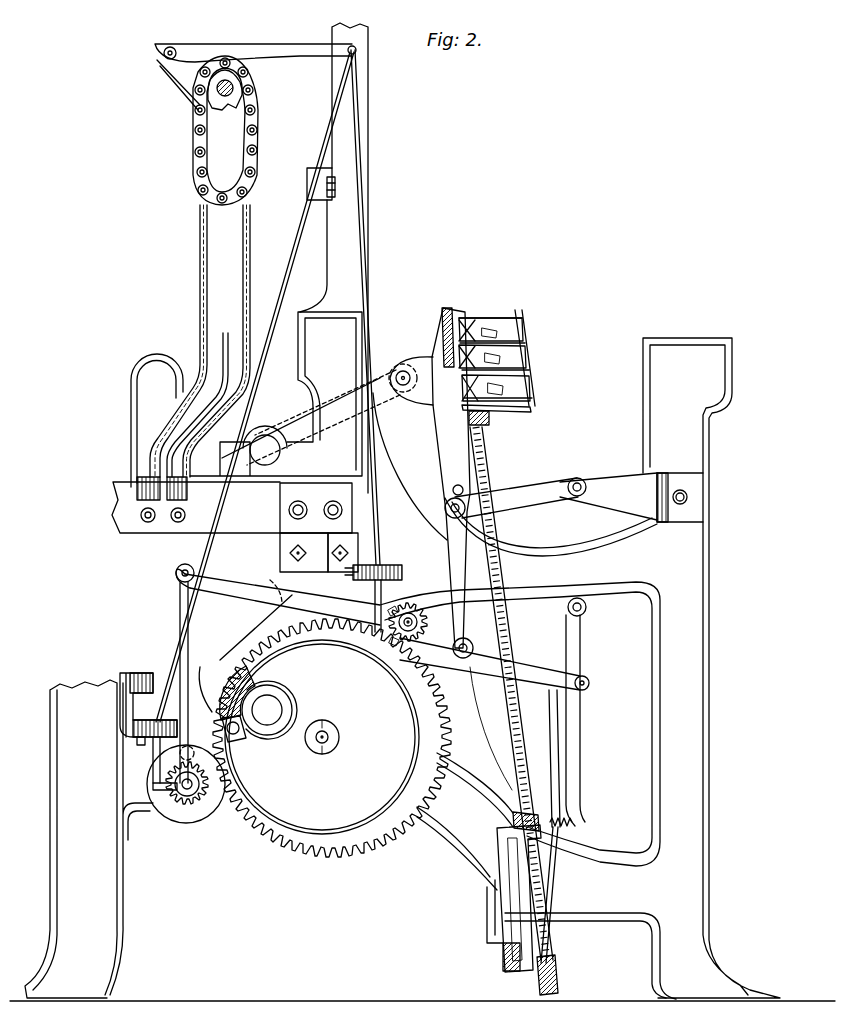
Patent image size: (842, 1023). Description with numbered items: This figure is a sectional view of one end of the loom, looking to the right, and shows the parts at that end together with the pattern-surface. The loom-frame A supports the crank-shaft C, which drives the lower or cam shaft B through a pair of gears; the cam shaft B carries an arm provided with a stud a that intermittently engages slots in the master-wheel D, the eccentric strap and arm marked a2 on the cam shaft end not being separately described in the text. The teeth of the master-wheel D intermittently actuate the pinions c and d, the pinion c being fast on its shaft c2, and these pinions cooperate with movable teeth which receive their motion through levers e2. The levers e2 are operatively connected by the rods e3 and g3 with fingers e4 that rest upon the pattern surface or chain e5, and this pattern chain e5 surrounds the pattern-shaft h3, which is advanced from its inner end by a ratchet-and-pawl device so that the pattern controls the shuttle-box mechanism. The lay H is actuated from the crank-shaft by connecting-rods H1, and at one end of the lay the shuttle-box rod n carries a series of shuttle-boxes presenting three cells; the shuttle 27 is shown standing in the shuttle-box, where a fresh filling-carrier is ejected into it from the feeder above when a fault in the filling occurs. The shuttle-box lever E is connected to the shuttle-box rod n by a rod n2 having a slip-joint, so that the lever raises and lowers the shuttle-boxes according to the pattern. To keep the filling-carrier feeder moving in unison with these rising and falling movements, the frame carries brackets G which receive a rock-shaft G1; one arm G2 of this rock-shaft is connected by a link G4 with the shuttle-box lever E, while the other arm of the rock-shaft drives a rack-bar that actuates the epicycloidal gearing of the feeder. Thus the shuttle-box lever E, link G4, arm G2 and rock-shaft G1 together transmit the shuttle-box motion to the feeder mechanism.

The loom-frame A is at (708, 636).
The cam shaft B is at (271, 705).
The crank-shaft C is at (266, 443).
The master-wheel D is at (320, 850).
The shuttle-box lever E is at (525, 663).
The brackets G is at (625, 480).
The rock-shaft G1 is at (583, 481).
The arm of rock-shaft G2 is at (540, 487).
The link G4 is at (440, 530).
The lay H is at (443, 426).
The connecting-rods H1 is at (380, 378).
The stud a is at (242, 740).
The eccentric strap arm a2 is at (207, 655).
The shaft b is at (316, 742).
The pinion c is at (428, 625).
The shaft c2 is at (410, 610).
The pinion d is at (178, 787).
The levers e2 is at (398, 580).
The rod e3 is at (368, 292).
The fingers e4 is at (244, 50).
The pattern surface or chain e5 is at (198, 130).
The rod g3 is at (260, 358).
The pattern-shaft h3 is at (220, 92).
The shuttle-box rod n is at (520, 754).
The rod n2 is at (555, 940).
The shuttle 27 is at (470, 330).